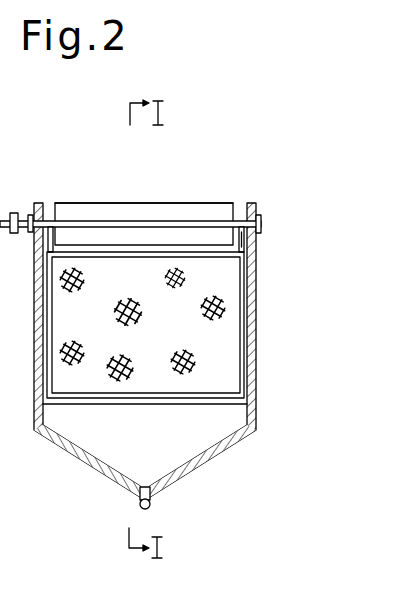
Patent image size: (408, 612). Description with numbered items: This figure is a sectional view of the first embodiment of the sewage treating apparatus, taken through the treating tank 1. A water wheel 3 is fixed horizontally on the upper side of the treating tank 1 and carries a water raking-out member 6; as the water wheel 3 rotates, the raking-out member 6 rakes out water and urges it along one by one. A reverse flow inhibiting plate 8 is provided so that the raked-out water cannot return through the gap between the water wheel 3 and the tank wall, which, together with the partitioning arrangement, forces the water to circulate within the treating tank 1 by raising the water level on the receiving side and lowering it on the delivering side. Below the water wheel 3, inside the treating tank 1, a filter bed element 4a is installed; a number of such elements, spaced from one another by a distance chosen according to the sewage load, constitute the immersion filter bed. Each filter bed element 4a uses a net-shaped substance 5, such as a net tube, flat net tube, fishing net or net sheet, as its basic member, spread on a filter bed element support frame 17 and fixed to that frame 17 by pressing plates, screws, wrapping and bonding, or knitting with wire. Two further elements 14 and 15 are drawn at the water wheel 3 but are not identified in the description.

The treating tank 1 is at (257, 405).
The water wheel 3 is at (218, 203).
The water raking-out member 6 is at (181, 203).
The rotary shaft 14 is at (52, 214).
The shaft end knob 15 is at (19, 212).
The reverse flow inhibiting plate 8 is at (243, 242).
The filter bed element support frame 17 is at (243, 317).
The net-shaped substance 5 is at (224, 303).
The filter bed element 4a is at (199, 357).